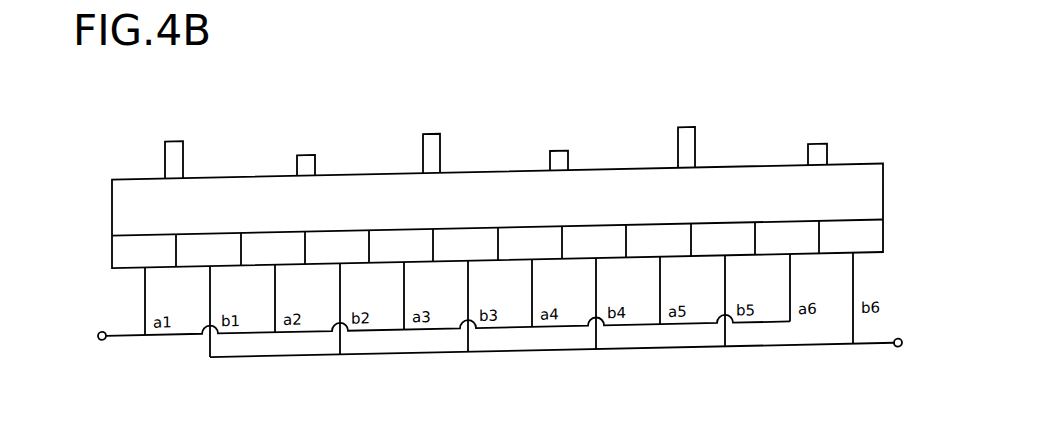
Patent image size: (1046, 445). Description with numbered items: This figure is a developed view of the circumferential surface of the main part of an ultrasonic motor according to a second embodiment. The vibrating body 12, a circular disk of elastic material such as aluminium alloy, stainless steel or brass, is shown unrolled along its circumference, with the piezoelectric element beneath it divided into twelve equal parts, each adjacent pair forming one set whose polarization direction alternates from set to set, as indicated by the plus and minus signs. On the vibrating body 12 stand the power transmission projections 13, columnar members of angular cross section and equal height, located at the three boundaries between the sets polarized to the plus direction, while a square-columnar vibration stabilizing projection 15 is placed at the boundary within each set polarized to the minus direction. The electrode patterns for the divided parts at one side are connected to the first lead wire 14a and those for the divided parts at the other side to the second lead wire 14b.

The vibrating body 12 is at (853, 177).
The power transmission projections 13 is at (175, 142).
The vibration stabilizing projection 15 is at (308, 155).
The first lead wire 14a is at (133, 338).
The second lead wire 14b is at (885, 343).